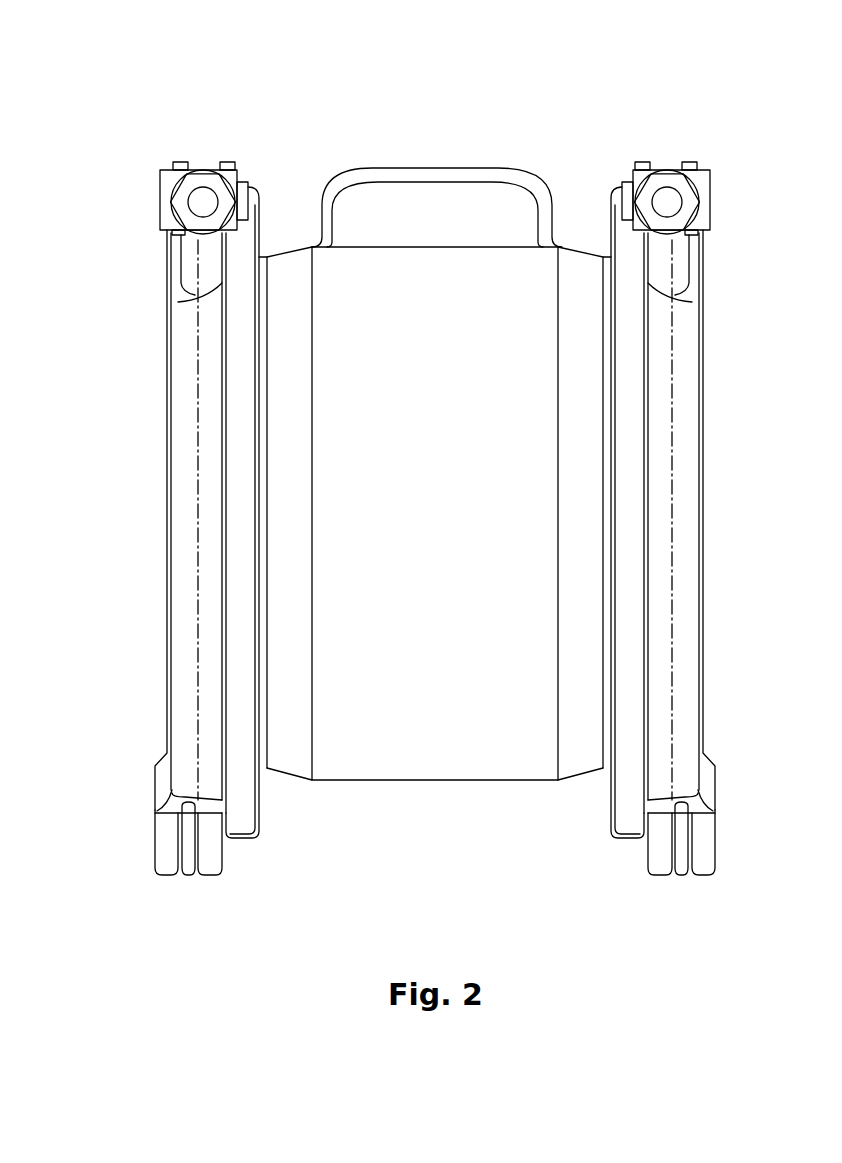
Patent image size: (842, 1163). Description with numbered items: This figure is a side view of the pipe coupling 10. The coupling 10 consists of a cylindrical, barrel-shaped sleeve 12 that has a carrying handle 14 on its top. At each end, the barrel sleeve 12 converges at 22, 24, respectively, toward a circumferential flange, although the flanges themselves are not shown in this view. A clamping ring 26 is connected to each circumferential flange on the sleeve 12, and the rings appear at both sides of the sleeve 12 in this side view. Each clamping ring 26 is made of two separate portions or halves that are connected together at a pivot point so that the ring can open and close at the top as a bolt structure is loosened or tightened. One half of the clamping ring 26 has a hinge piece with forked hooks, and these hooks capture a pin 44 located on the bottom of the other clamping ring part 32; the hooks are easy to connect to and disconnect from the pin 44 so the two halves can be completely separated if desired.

The pipe coupling 10 is at (552, 118).
The barrel-shaped sleeve 12 is at (382, 735).
The carrying handle 14 is at (438, 167).
The converging portion of barrel sleeve 22 is at (282, 250).
The converging portion of barrel sleeve 24 is at (582, 250).
The clamping ring 26 is at (165, 433).
The clamping ring half 32 is at (190, 608).
The pin 44 is at (697, 848).